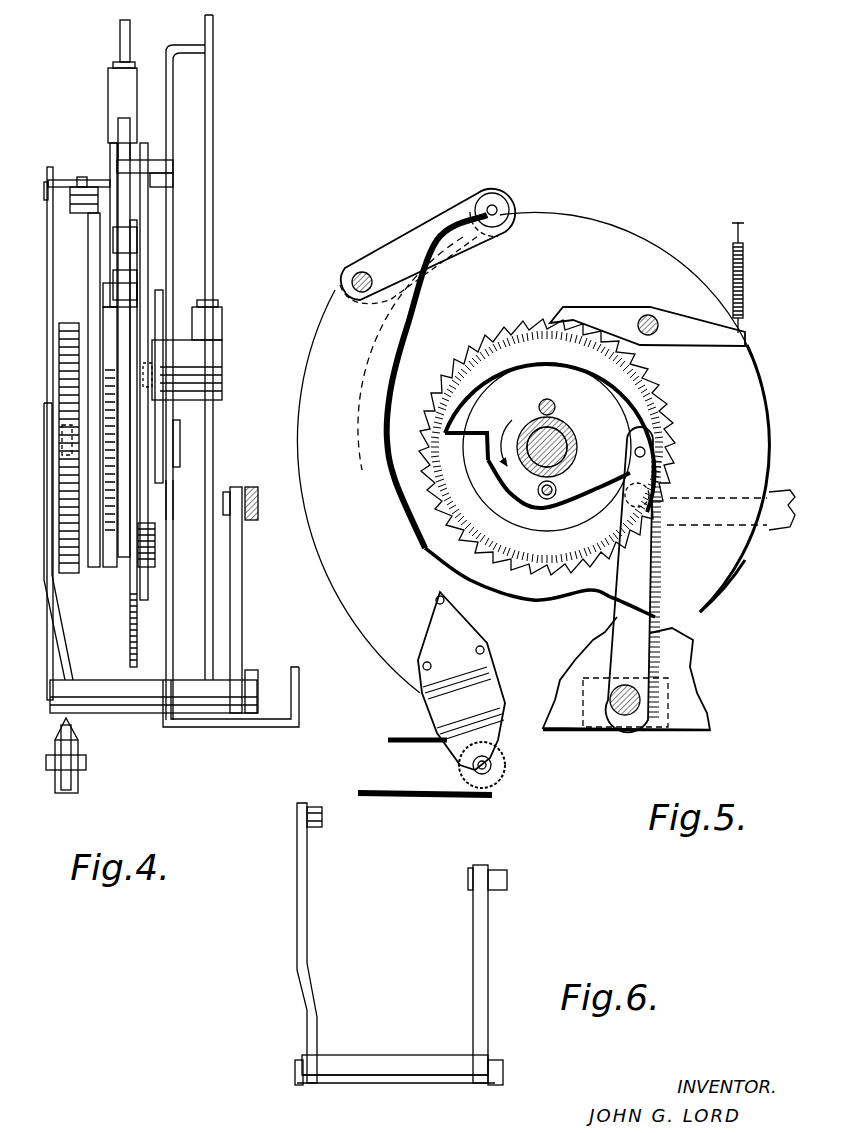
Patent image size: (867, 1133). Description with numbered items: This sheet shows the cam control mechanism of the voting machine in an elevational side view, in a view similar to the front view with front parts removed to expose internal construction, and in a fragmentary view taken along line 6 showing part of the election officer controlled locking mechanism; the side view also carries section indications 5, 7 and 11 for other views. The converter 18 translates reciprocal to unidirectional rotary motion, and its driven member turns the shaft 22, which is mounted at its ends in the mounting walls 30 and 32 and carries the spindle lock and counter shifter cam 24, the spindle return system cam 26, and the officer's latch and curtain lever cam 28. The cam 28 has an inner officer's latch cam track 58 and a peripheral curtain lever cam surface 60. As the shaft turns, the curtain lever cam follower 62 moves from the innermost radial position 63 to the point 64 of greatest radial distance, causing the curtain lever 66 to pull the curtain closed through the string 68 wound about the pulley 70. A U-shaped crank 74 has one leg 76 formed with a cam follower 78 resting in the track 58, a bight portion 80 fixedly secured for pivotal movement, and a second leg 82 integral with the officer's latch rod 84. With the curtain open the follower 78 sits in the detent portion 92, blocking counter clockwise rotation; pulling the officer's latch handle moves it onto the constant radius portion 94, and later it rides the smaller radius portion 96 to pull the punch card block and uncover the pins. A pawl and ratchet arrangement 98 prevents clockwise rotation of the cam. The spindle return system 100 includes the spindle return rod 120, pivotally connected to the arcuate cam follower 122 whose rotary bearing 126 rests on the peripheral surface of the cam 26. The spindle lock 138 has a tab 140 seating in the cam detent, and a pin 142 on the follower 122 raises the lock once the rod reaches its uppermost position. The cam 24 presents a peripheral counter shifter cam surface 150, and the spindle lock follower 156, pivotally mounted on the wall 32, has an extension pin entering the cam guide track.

In FIG. 4, the section line 5- 5 is at (57, 100).
In FIG. 5, the line 6— 6 is at (735, 465).
In FIG. 4, the section line 7- 7 is at (93, 78).
In FIG. 4, the section line 11- 11 is at (110, 33).
In FIG. 4, the converter 18 is at (108, 572).
In FIG. 4, the shaft 22 is at (181, 447).
In FIG. 5, the shaft 22 is at (572, 444).
In FIG. 4, the spindle lock and counter shifter cam 24 is at (146, 519).
In FIG. 4, the spindle return system cam 26 is at (140, 613).
In FIG. 4, the officer's latch and curtain lever cam 28 is at (83, 607).
In FIG. 5, the officer's latch and curtain lever cam 28 is at (722, 601).
In FIG. 4, the mounting wall 30 is at (175, 497).
In FIG. 5, the mounting wall 30 is at (695, 700).
In FIG. 4, the mounting wall 32 is at (48, 165).
In FIG. 5, the officer's latch cam track 58 is at (640, 396).
In FIG. 5, the curtain lever cam surface 60 is at (668, 264).
In FIG. 4, the curtain lever cam follower 62 is at (82, 180).
In FIG. 5, the curtain lever cam follower 62 is at (500, 195).
In FIG. 5, the innermost radial position 63 is at (588, 603).
In FIG. 5, the point of greatest radial distance 64 is at (712, 626).
In FIG. 5, the curtain lever 66 is at (392, 651).
In FIG. 5, the string 68 is at (420, 798).
In FIG. 5, the pulley 70 is at (506, 771).
In FIG. 5, the crank 74 is at (656, 672).
In FIG. 6, the crank 74 is at (386, 1053).
In FIG. 4, the leg 76 is at (66, 646).
In FIG. 5, the leg 76 is at (660, 583).
In FIG. 6, the leg 76 is at (297, 913).
In FIG. 4, the cam follower 78 is at (70, 440).
In FIG. 5, the cam follower 78 is at (665, 486).
In FIG. 6, the cam follower 78 is at (320, 823).
In FIG. 4, the bight portion 80 is at (90, 716).
In FIG. 5, the bight portion 80 is at (624, 718).
In FIG. 6, the bight portion 80 is at (408, 1076).
In FIG. 4, the second leg 82 is at (242, 585).
In FIG. 6, the second leg 82 is at (486, 933).
In FIG. 4, the officer's latch rod 84 is at (252, 487).
In FIG. 5, the officer's latch rod 84 is at (778, 494).
In FIG. 5, the detent portion 92 is at (462, 462).
In FIG. 5, the constant radius portion 94 is at (492, 354).
In FIG. 5, the smaller radius portion 96 is at (536, 520).
In FIG. 4, the pawl and ratchet arrangement 98 is at (58, 340).
In FIG. 5, the pawl and ratchet arrangement 98 is at (552, 308).
In FIG. 4, the spindle return system 100 is at (222, 90).
In FIG. 4, the spindle return rod 120 is at (118, 95).
In FIG. 4, the arcuate cam follower 122 is at (148, 212).
In FIG. 4, the rotary bearing 126 is at (138, 285).
In FIG. 4, the spindle lock 138 is at (115, 232).
In FIG. 4, the tab 140 is at (130, 262).
In FIG. 4, the pin 142 is at (150, 172).
In FIG. 4, the counter shifter cam surface 150 is at (150, 432).
In FIG. 4, the spindle lock follower 156 is at (205, 352).